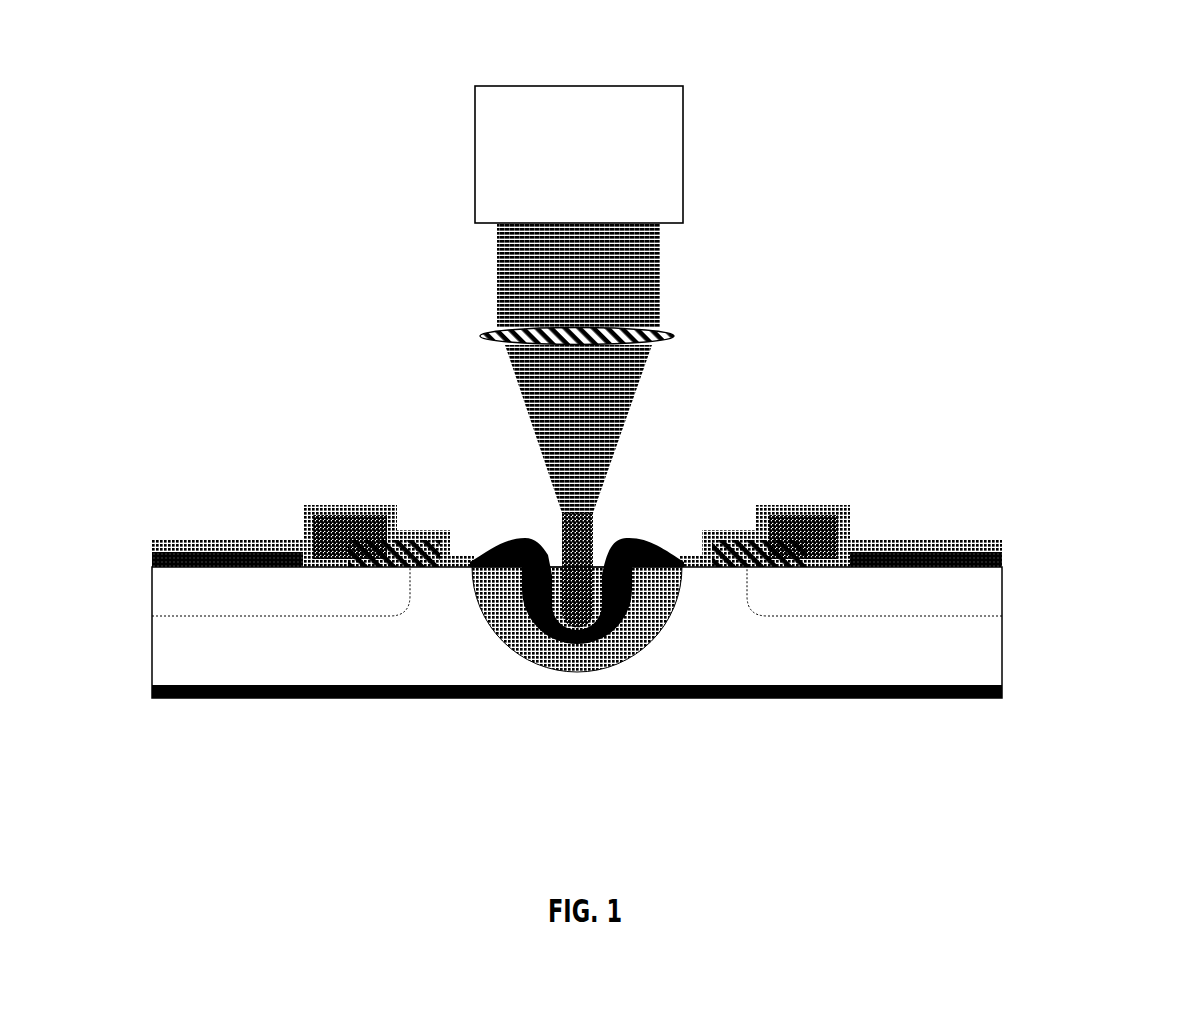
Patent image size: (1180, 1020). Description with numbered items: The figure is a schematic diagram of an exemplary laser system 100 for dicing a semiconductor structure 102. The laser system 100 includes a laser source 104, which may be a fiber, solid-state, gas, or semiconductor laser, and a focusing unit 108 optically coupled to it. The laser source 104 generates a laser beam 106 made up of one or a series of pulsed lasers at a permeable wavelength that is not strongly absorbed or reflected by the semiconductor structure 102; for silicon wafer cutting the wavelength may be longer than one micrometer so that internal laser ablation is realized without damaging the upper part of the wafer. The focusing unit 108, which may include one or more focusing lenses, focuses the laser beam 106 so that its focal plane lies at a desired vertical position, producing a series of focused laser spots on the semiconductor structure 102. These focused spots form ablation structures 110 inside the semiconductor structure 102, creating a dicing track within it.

The laser system 100 is at (600, 30).
The semiconductor structure 102 is at (1002, 661).
The laser source 104 is at (683, 152).
The laser beam 106 is at (660, 276).
The focusing unit 108 is at (672, 336).
The ablation structures 110 is at (630, 540).